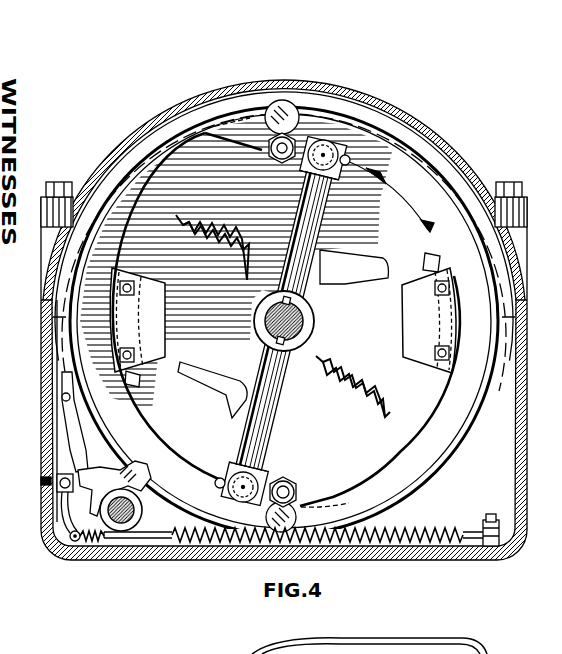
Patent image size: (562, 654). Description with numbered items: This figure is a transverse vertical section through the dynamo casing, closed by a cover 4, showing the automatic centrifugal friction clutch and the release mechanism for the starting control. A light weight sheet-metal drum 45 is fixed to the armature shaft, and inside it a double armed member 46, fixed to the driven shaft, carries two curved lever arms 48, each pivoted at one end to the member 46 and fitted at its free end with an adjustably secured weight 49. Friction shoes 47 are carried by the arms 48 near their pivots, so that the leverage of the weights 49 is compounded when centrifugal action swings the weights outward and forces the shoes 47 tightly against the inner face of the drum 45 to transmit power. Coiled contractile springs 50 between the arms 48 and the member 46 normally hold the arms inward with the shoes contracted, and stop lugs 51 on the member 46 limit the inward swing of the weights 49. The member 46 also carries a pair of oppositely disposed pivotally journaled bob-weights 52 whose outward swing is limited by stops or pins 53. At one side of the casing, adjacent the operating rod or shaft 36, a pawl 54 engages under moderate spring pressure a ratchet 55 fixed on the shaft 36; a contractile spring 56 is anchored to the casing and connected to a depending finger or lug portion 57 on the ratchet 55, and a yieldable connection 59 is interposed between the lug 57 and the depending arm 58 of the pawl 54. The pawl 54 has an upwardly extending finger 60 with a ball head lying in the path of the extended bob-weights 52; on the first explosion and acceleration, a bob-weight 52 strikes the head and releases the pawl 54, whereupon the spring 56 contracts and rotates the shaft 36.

The cover 4 is at (110, 156).
The operating rod or shaft 36 is at (138, 512).
The drum 45 is at (455, 440).
The double armed member 46 is at (276, 400).
The friction shoes 47 is at (228, 128).
The curved lever arms 48 is at (406, 457).
The weight 49 is at (410, 312).
The coiled contractile springs 50 is at (348, 366).
The stop lugs 51 is at (373, 271).
The bob-weights 52 is at (292, 108).
The stops or pins 53 is at (350, 158).
The pawl 54 is at (66, 511).
The ratchet 55 is at (138, 478).
The contractile spring 56 is at (446, 546).
The depending finger or lug portion 57 is at (112, 544).
The depending arm 58 is at (64, 552).
The yieldable connection 59 is at (93, 542).
The finger 60 is at (72, 433).